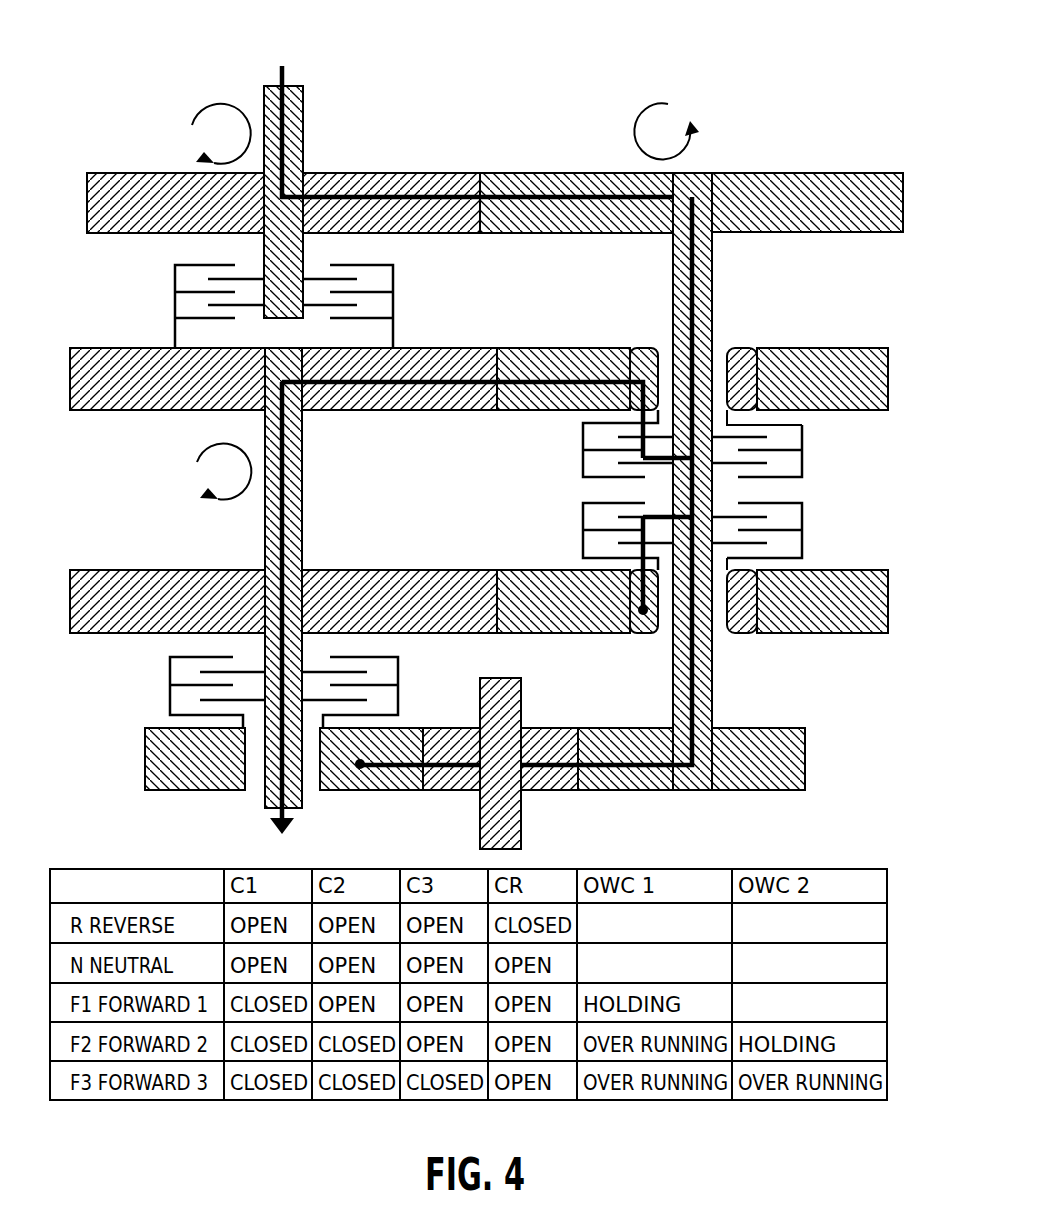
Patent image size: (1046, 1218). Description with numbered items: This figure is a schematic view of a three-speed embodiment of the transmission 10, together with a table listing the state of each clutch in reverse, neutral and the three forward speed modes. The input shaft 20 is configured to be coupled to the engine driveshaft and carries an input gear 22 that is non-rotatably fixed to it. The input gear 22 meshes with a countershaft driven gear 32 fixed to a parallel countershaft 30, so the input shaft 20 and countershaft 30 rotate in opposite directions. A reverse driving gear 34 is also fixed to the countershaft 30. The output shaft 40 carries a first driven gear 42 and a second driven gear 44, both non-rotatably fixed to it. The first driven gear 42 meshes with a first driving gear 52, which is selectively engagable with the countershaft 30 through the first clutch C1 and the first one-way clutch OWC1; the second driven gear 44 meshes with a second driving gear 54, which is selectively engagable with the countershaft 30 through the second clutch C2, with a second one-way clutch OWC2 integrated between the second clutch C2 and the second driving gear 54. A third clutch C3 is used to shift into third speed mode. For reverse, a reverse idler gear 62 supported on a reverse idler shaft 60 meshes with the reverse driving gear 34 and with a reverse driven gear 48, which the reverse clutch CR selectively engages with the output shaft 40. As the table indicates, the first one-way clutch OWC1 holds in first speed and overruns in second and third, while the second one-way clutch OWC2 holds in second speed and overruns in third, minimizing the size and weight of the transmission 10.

The transmission 10 is at (815, 45).
The input shaft 20 is at (295, 107).
The input gear 22 is at (448, 173).
The countershaft 30 is at (700, 173).
The countershaft driven gear 32 is at (873, 173).
The reverse driving gear 34 is at (775, 783).
The output shaft 40 is at (268, 800).
The first driven gear 42 is at (68, 600).
The second driven gear 44 is at (68, 382).
The reverse driven gear 48 is at (145, 758).
The first driving gear 52 is at (873, 580).
The second driving gear 54 is at (858, 348).
The reverse idler shaft 60 is at (521, 843).
The reverse idler gear 62 is at (563, 783).
The first clutch C1 is at (800, 549).
The second clutch C2 is at (800, 466).
The third clutch C3 is at (172, 281).
The reverse clutch CR is at (170, 688).
The first one-way clutch OWC1 is at (737, 633).
The second one-way clutch OWC2 is at (737, 348).